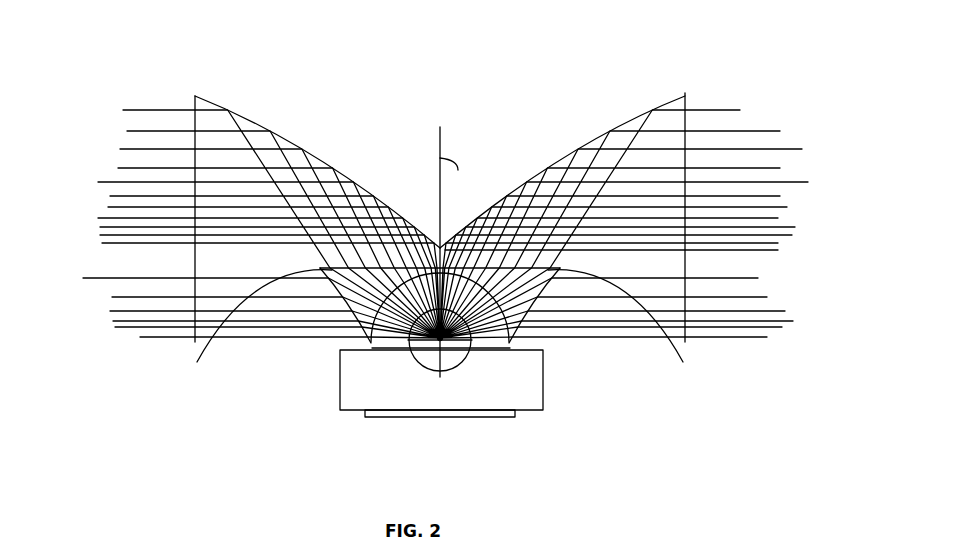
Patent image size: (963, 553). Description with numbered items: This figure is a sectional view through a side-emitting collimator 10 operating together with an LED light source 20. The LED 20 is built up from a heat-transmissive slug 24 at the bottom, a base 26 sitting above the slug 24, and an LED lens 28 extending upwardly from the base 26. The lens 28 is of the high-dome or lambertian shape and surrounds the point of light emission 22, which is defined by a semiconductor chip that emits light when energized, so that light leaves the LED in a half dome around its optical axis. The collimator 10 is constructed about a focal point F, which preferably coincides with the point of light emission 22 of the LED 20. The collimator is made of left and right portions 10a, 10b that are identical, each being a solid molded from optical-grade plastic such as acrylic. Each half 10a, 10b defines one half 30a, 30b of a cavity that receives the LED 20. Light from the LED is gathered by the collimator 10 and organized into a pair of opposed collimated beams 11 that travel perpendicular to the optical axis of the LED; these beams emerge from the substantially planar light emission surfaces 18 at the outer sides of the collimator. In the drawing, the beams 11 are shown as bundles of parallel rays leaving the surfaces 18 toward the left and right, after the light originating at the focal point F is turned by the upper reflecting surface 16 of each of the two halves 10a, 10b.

The side-emitting collimator 10 is at (687, 75).
The left portion of the side-emitting collimator 10a is at (317, 156).
The right portion of the side-emitting collimator 10b is at (538, 175).
The collimated beams 11 is at (80, 106).
The reflective surface 16 is at (237, 122).
The light emission surfaces 18 is at (195, 265).
The LED light source 20 is at (544, 385).
The point of light emission 22 is at (433, 346).
The heat-transmissive slug 24 is at (515, 413).
The base 26 is at (537, 362).
The LED lens 28 is at (367, 345).
The half of the cavity 30a is at (251, 329).
The half of the cavity 30b is at (629, 333).
The focal point F is at (442, 344).